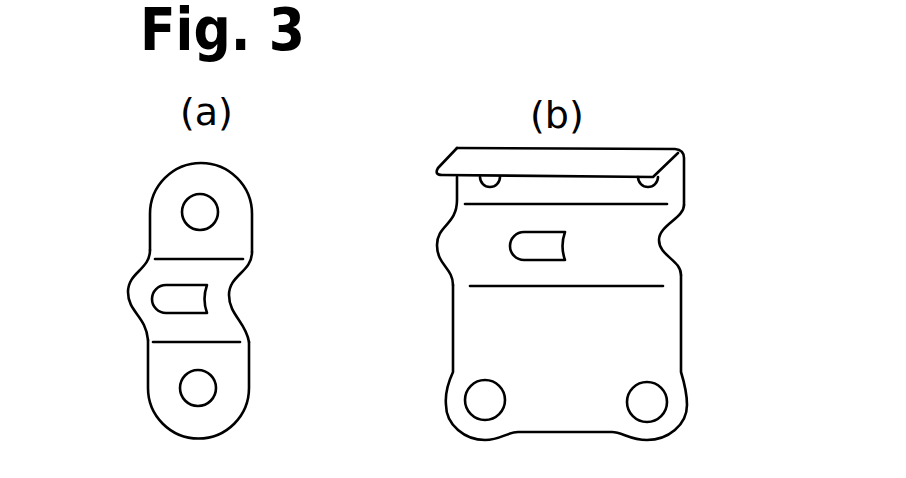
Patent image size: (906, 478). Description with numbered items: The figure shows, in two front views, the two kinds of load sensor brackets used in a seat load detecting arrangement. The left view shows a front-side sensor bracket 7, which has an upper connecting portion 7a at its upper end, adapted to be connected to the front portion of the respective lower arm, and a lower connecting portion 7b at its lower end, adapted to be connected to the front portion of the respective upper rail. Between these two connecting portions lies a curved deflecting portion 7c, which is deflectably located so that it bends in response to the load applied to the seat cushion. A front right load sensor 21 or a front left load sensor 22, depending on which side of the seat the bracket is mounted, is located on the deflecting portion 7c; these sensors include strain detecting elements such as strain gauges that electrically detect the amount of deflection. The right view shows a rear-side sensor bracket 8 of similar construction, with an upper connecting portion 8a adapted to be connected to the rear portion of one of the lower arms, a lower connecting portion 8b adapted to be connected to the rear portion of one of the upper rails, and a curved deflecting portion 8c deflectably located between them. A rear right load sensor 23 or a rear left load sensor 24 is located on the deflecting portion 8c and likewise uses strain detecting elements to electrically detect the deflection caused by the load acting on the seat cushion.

The front-side sensor bracket 7 is at (219, 298).
The upper connecting portion 7a is at (242, 235).
The lower connecting portion 7b is at (240, 386).
The deflecting portion 7c is at (135, 302).
The front left load sensor 22 is at (276, 285).
The front right load sensor 21 is at (195, 285).
The rear-side sensor bracket 8 is at (606, 266).
The upper connecting portion 8a is at (683, 190).
The lower connecting portion 8b is at (680, 402).
The deflecting portion 8c is at (660, 272).
The rear left load sensor 24 is at (606, 242).
The rear right load sensor 23 is at (537, 246).